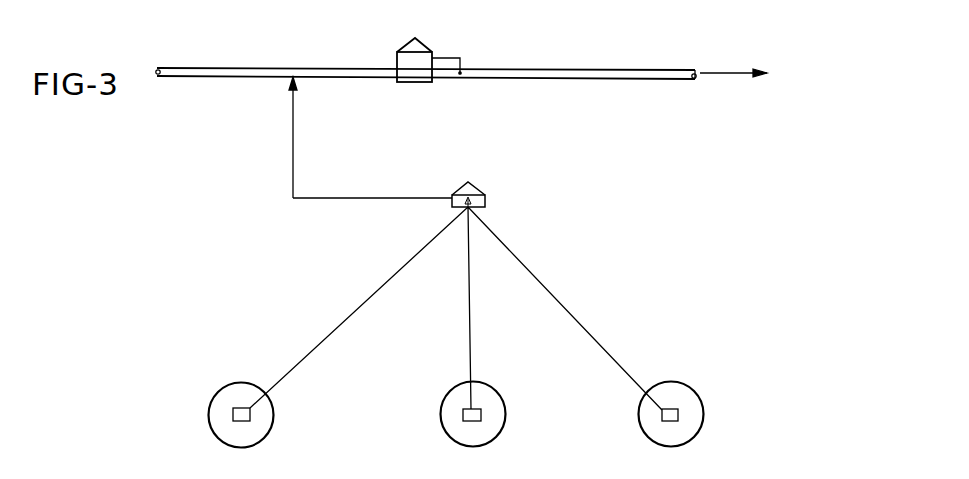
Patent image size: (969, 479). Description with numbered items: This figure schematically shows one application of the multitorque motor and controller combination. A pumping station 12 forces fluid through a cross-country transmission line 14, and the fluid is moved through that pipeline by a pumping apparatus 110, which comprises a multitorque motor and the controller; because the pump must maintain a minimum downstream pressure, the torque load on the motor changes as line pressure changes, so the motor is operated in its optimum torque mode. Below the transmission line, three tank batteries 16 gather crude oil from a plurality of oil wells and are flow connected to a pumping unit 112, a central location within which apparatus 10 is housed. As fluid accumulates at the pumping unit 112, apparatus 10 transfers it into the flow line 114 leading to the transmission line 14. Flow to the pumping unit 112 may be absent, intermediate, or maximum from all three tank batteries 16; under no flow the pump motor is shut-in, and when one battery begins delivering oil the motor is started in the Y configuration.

The apparatus 10 is at (485, 193).
The pumping station 12 is at (397, 82).
The cross-country transmission line 14 is at (583, 79).
The tank batteries 16 is at (240, 382).
The pumping apparatus 110 is at (423, 83).
The pumping unit 112 is at (485, 202).
The flow line 114 is at (342, 198).